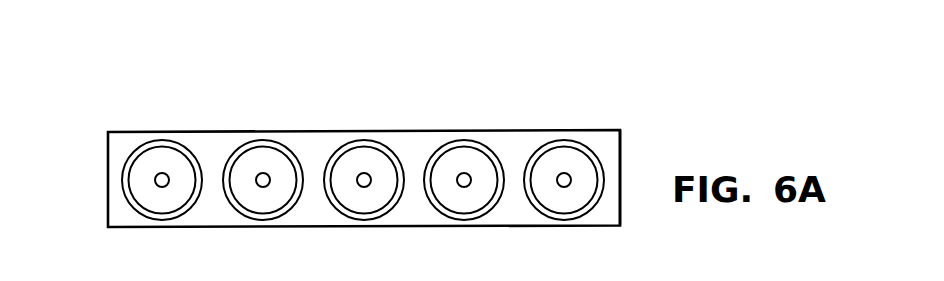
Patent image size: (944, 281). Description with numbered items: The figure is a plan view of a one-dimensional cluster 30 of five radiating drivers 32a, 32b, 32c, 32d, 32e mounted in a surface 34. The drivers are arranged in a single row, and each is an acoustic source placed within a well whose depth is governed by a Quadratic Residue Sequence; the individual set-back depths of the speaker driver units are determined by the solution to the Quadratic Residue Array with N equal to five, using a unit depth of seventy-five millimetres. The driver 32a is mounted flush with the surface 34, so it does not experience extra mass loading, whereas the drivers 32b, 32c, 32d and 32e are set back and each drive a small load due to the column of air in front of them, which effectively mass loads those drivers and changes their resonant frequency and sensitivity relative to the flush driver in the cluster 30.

The one-dimensional cluster 30 is at (100, 120).
The radiating driver 32a is at (175, 152).
The radiating driver 32b is at (265, 152).
The radiating driver 32c is at (355, 152).
The radiating driver 32d is at (455, 153).
The radiating driver 32e is at (570, 155).
The surface 34 is at (622, 170).